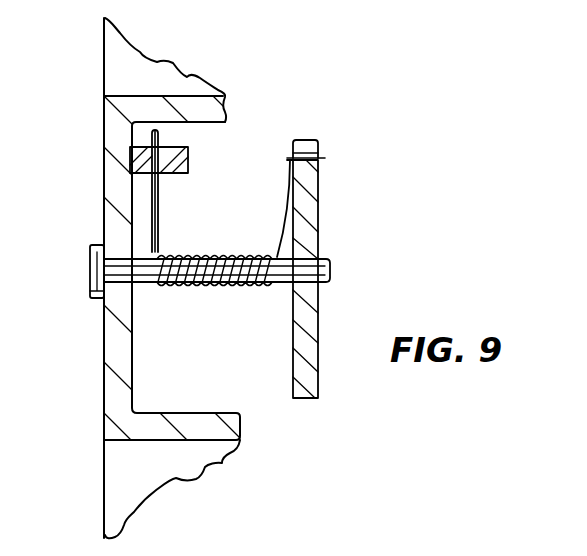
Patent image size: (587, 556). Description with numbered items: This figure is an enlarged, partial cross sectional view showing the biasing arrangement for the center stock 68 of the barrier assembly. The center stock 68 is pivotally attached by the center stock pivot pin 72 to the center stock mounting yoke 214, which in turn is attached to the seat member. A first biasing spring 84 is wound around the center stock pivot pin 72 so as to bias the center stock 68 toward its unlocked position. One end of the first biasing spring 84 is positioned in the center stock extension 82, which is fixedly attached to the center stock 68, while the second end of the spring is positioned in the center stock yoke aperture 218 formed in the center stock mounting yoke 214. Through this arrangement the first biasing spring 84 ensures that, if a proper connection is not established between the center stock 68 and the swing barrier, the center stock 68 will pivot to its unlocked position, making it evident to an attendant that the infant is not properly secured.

The center stock 68 is at (104, 185).
The center stock pivot pin 72 is at (90, 276).
The center stock extension 82 is at (190, 158).
The first biasing spring 84 is at (158, 228).
The center stock mounting yoke 214 is at (318, 200).
The center stock yoke aperture 218 is at (288, 160).